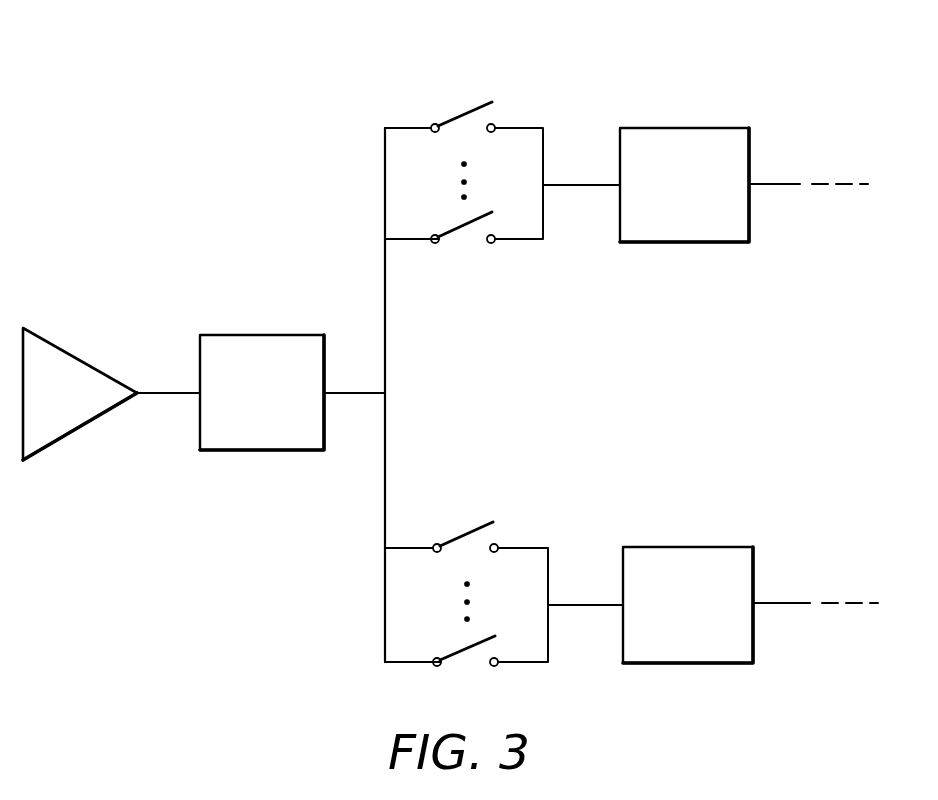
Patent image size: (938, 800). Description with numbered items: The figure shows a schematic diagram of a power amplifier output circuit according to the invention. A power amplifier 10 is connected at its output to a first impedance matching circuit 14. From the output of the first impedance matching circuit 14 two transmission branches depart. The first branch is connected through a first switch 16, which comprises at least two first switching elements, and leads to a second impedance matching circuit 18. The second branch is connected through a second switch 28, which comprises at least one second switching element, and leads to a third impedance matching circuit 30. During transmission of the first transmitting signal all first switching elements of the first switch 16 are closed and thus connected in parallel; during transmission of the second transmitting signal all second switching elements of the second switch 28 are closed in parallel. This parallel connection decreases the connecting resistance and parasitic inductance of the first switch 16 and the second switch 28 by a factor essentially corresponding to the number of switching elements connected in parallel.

The power amplifier 10 is at (80, 357).
The first impedance matching circuit 14 is at (258, 335).
The first switch 16 is at (502, 110).
The second impedance matching circuit 18 is at (678, 128).
The second switch 28 is at (504, 528).
The third impedance matching circuit 30 is at (684, 547).